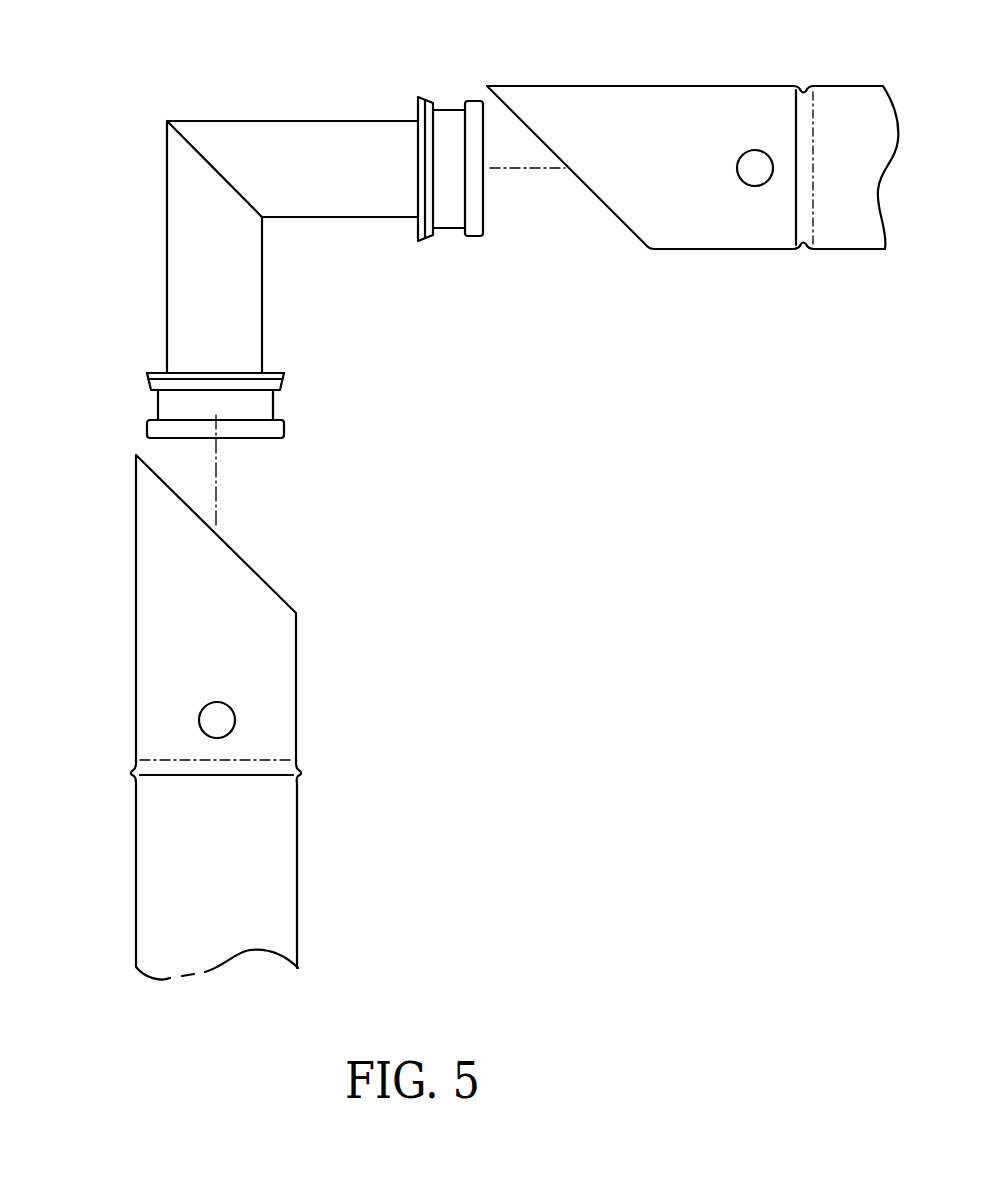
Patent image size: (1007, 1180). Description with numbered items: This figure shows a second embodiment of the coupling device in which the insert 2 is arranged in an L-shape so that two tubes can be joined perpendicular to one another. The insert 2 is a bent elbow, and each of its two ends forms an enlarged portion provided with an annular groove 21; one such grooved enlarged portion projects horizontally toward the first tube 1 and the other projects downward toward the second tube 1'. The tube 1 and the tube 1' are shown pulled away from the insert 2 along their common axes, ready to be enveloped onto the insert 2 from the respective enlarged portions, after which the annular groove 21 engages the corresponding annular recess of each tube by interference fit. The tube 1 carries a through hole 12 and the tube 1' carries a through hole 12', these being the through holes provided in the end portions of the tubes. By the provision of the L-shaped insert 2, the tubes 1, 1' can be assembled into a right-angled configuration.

The tube 1 is at (692, 139).
The tube 1' is at (172, 697).
The insert 2 is at (303, 90).
The through hole 12 is at (733, 244).
The through hole 12' is at (297, 713).
The annular groove 21 is at (456, 80).